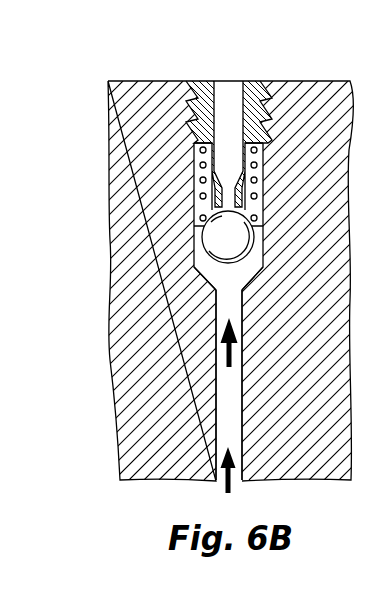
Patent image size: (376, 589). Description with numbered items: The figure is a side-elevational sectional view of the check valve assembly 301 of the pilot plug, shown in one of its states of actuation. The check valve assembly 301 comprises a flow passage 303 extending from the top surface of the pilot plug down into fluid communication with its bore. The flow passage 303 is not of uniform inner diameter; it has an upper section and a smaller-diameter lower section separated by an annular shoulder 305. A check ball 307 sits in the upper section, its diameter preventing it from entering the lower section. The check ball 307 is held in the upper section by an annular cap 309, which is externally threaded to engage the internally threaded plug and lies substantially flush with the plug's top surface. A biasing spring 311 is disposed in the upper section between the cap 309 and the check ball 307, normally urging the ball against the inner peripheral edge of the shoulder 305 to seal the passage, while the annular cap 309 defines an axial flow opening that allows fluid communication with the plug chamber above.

The check valve assembly 301 is at (83, 117).
The flow passage 303 is at (223, 416).
The annular shoulder 305 is at (202, 276).
The check ball 307 is at (222, 222).
The annular cap 309 is at (304, 81).
The biasing spring 311 is at (212, 172).